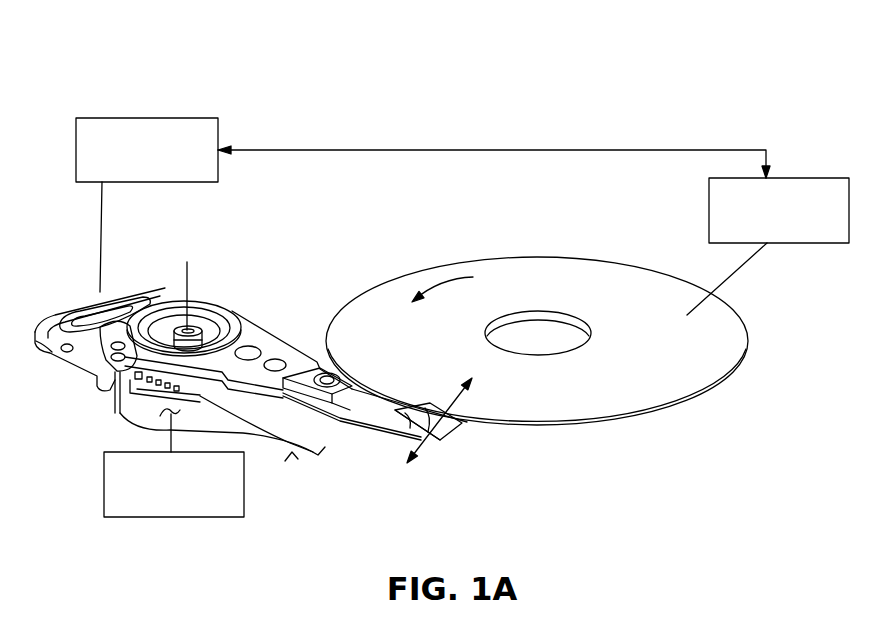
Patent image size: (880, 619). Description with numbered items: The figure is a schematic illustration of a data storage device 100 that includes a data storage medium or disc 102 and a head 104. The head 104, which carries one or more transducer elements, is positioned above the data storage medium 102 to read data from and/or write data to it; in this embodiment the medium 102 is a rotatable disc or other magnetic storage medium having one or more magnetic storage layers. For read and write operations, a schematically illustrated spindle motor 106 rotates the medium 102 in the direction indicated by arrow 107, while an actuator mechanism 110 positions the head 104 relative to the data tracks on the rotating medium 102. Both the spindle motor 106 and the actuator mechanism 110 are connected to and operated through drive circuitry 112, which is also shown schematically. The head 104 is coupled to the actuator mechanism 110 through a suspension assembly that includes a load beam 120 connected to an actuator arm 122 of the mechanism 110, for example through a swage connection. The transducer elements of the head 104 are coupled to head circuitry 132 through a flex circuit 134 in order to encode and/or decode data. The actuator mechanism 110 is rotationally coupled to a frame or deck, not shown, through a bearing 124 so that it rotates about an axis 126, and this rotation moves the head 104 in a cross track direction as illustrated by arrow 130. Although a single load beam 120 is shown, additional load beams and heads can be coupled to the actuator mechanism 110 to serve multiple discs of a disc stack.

The data storage device 100 is at (669, 115).
The data storage medium or disc 102 is at (632, 285).
The head 104 is at (445, 437).
The spindle motor 106 is at (816, 178).
The arrow 107 is at (440, 287).
The actuator mechanism 110 is at (207, 288).
The drive circuitry 112 is at (190, 118).
The load beam 120 is at (350, 397).
The actuator arm 122 is at (282, 334).
The bearing 124 is at (180, 326).
The axis 126 is at (186, 280).
The arrow 130 is at (460, 417).
The head circuitry 132 is at (104, 481).
The flex circuit 134 is at (194, 423).